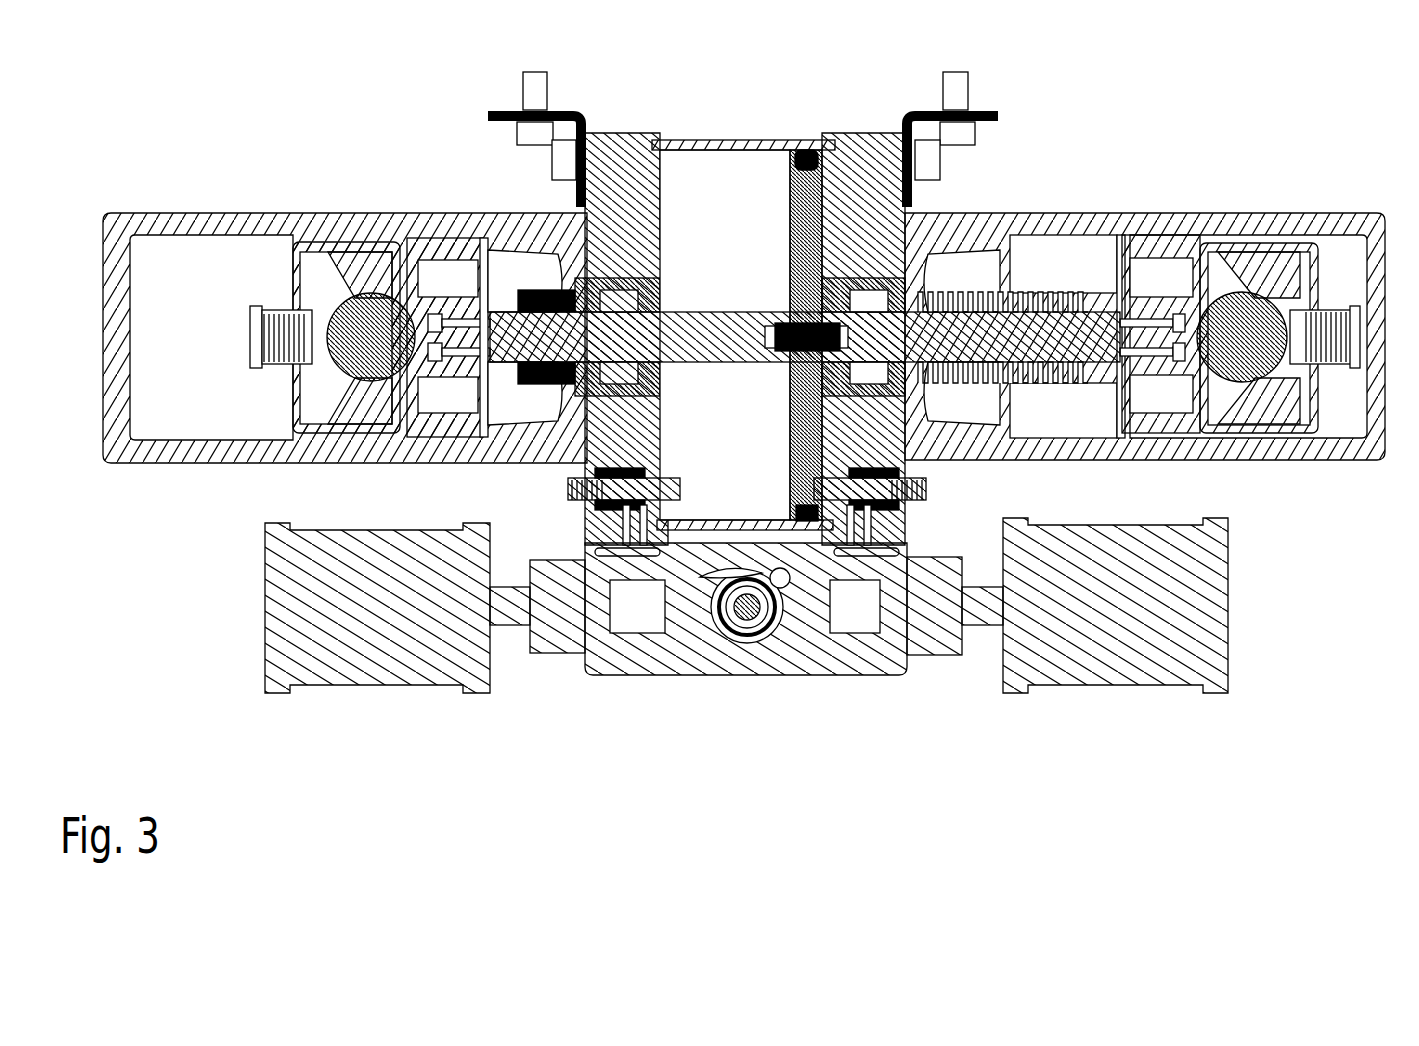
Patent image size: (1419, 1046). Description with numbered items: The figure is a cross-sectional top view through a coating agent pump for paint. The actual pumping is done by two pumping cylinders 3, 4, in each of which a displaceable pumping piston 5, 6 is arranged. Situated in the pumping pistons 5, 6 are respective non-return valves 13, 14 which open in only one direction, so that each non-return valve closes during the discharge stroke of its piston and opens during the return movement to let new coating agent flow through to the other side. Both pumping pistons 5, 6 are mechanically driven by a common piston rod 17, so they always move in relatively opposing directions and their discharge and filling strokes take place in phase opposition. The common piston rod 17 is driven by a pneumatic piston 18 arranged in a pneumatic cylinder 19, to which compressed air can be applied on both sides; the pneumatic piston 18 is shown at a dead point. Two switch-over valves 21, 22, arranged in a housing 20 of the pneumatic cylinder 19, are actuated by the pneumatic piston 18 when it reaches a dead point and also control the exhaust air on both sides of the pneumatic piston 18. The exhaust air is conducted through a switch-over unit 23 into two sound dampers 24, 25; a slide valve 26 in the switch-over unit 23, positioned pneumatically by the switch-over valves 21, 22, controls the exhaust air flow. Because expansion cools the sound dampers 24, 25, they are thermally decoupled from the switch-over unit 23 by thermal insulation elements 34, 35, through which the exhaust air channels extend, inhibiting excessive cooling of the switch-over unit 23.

The pumping cylinder 3 is at (1295, 222).
The pumping cylinder 4 is at (180, 215).
The pumping piston 5 is at (440, 243).
The pumping piston 6 is at (1203, 250).
The non-return valve 13 is at (1240, 345).
The non-return valve 14 is at (345, 312).
The piston rod 17 is at (708, 342).
The pneumatic piston 18 is at (805, 218).
The pneumatic cylinder 19 is at (722, 185).
The housing 20 is at (878, 165).
The switch-over valve 21 is at (533, 496).
The switch-over valve 22 is at (952, 496).
The switch-over unit 23 is at (820, 655).
The sound damper 24 is at (390, 637).
The sound damper 25 is at (1140, 640).
The slide valve 26 is at (748, 612).
The thermal insulation element 34 is at (553, 640).
The thermal insulation element 35 is at (936, 640).